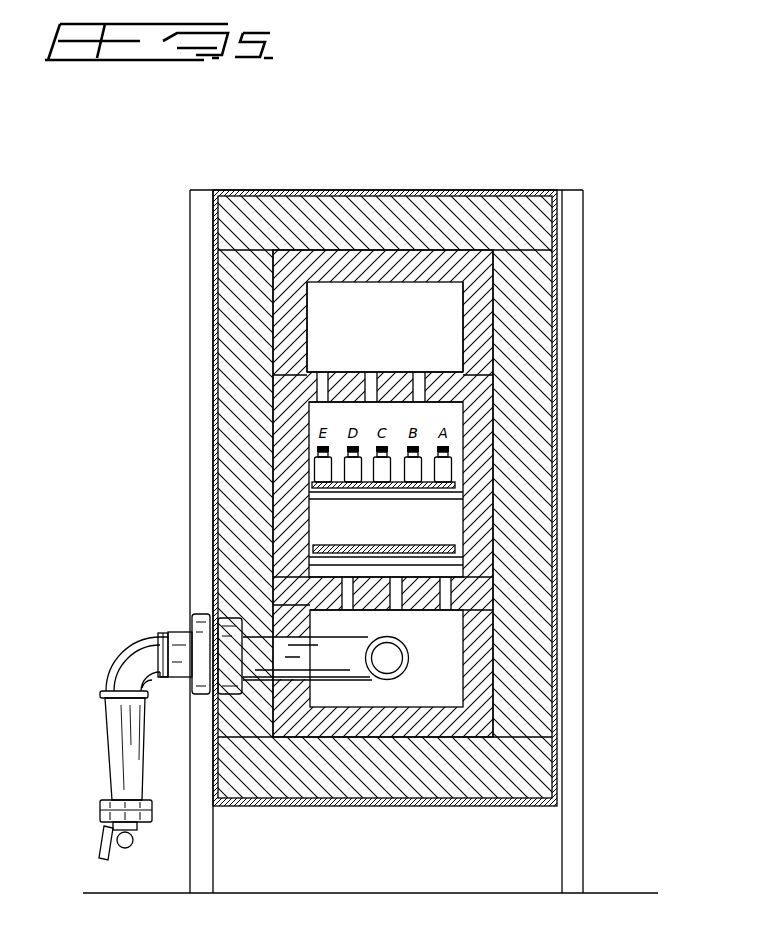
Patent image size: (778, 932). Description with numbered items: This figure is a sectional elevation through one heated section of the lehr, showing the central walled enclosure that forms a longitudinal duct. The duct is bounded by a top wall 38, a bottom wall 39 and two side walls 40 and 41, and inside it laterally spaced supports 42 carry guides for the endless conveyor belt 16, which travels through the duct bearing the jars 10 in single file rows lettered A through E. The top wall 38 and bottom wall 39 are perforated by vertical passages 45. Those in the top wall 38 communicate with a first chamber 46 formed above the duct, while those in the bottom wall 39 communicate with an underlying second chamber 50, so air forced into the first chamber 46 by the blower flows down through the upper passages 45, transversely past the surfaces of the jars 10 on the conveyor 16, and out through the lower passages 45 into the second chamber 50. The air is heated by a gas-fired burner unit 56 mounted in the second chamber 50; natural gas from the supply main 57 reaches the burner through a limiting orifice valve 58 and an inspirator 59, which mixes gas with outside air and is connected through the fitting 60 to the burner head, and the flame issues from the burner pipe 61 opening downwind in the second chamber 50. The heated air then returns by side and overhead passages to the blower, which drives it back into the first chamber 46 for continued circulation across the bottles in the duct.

The jars 10 is at (445, 468).
The conveyor 16 is at (433, 488).
The top wall 38 is at (343, 373).
The bottom wall 39 is at (470, 590).
The side wall 40 is at (283, 432).
The side wall 41 is at (480, 427).
The support 42 is at (333, 560).
The vertical passages 45 is at (418, 373).
The first chamber 46 is at (353, 315).
The second chamber 50 is at (444, 644).
The gas-fired burner unit 56 is at (181, 626).
The supply main 57 is at (135, 842).
The limiting orifice valve 58 is at (103, 827).
The inspirator 59 is at (122, 743).
The pipe 60 is at (202, 675).
The burner pipe 61 is at (380, 676).